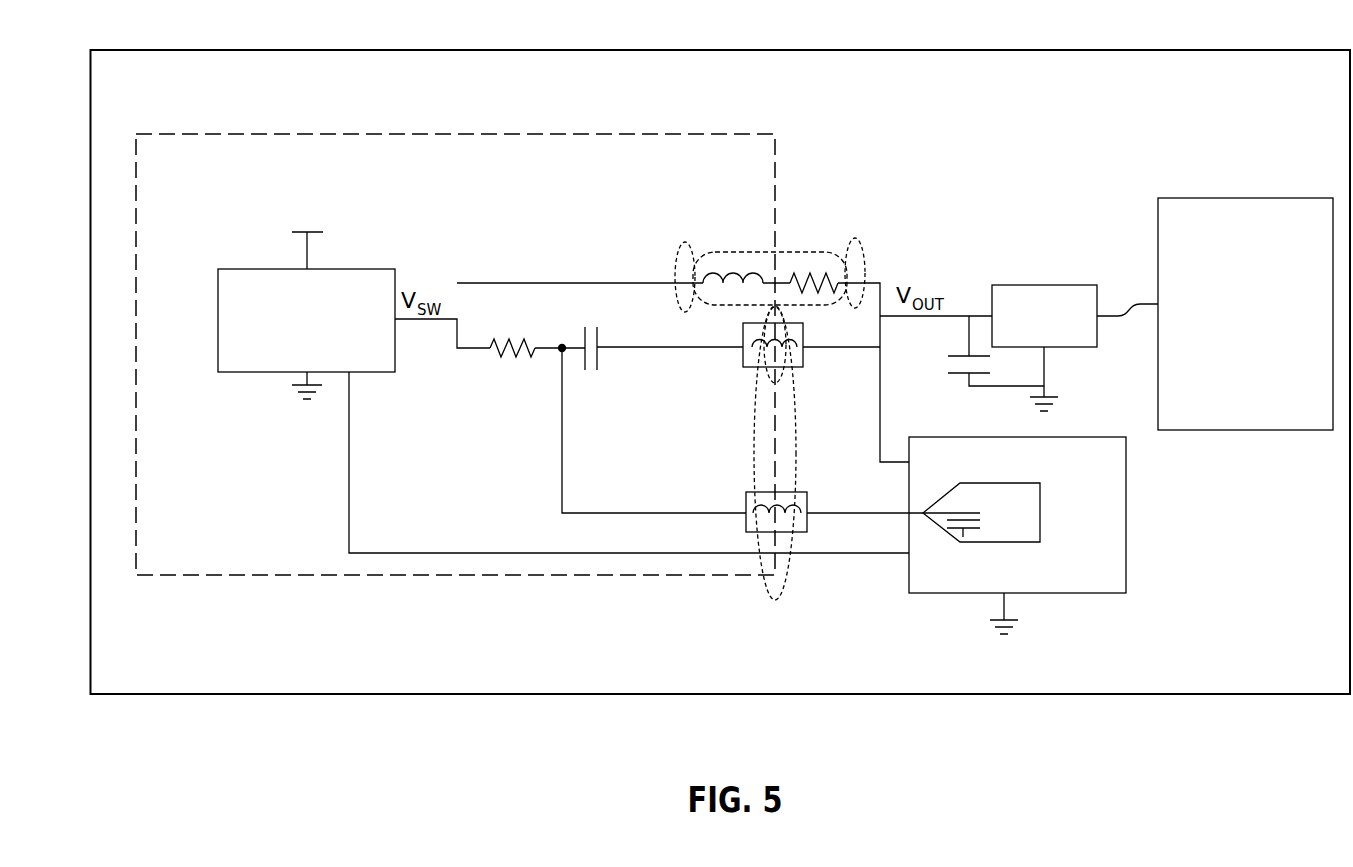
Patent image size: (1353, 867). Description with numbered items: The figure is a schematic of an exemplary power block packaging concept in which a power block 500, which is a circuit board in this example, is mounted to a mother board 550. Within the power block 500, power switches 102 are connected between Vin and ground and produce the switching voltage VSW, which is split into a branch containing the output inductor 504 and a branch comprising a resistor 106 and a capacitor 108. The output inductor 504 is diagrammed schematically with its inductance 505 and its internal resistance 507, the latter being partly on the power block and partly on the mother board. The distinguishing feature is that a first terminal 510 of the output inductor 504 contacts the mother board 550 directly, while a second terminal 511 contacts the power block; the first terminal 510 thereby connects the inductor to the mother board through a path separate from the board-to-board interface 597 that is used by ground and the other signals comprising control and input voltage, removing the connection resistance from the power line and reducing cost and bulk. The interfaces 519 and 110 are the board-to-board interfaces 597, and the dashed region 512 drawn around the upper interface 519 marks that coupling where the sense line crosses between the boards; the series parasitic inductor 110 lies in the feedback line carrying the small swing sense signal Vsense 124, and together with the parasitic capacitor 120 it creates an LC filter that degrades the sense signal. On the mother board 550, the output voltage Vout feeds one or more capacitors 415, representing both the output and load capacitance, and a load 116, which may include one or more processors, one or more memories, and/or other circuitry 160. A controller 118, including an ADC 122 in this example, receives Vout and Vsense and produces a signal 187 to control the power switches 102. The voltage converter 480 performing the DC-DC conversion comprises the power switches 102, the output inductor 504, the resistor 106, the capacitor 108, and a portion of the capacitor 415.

The voltage converter 480 is at (997, 150).
The power block 500 is at (199, 204).
The mother board 550 is at (1215, 138).
The power switches 102 is at (329, 365).
The resistor 106 is at (500, 355).
The capacitor 108 is at (590, 325).
The Vsense 124 is at (560, 352).
The output inductor 504 is at (712, 253).
The inductance 505 is at (750, 268).
The internal resistance 507 is at (810, 272).
The first terminal 510 is at (868, 254).
The second terminal 511 is at (672, 258).
The interface 519 is at (743, 367).
The magnetic coupling 512 is at (781, 378).
The series parasitic inductor 110 is at (778, 522).
The board-to-board interface 597 is at (767, 589).
The capacitor 415 is at (958, 380).
The load 116 is at (1052, 285).
The one or more processors, one or more memories, and/or other circuitry 160 is at (1270, 417).
The controller 118 is at (1128, 508).
The ADC 122 is at (1042, 520).
The parasitic capacitor 120 is at (970, 534).
The signal 187 is at (420, 553).